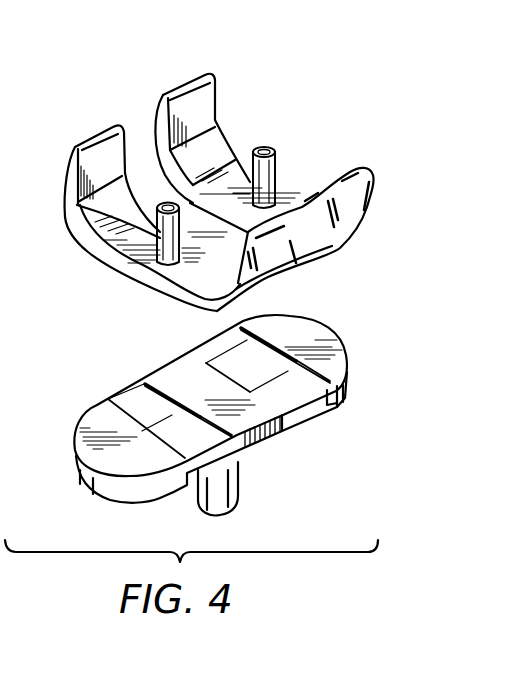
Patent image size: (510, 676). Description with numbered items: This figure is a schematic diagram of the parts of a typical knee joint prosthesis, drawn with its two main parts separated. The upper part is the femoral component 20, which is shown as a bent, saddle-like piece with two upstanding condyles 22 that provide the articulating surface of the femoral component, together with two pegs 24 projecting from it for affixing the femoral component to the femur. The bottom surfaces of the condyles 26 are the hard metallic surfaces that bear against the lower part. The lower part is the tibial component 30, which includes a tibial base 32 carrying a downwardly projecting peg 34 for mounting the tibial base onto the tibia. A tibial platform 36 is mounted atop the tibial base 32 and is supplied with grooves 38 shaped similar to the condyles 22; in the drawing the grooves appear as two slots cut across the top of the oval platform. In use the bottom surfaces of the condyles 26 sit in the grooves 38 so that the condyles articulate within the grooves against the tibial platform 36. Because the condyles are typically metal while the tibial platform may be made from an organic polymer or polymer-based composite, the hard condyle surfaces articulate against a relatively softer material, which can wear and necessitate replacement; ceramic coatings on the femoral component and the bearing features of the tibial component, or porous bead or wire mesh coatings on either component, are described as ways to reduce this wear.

The femoral component 20 is at (293, 110).
The condyles 22 is at (216, 89).
The pegs 24 is at (277, 163).
The bottom surfaces of the condyles 26 is at (120, 273).
The tibial component 30 is at (334, 311).
The tibial base 32 is at (93, 493).
The peg 34 is at (240, 478).
The tibial platform 36 is at (82, 469).
The grooves 38 is at (221, 351).